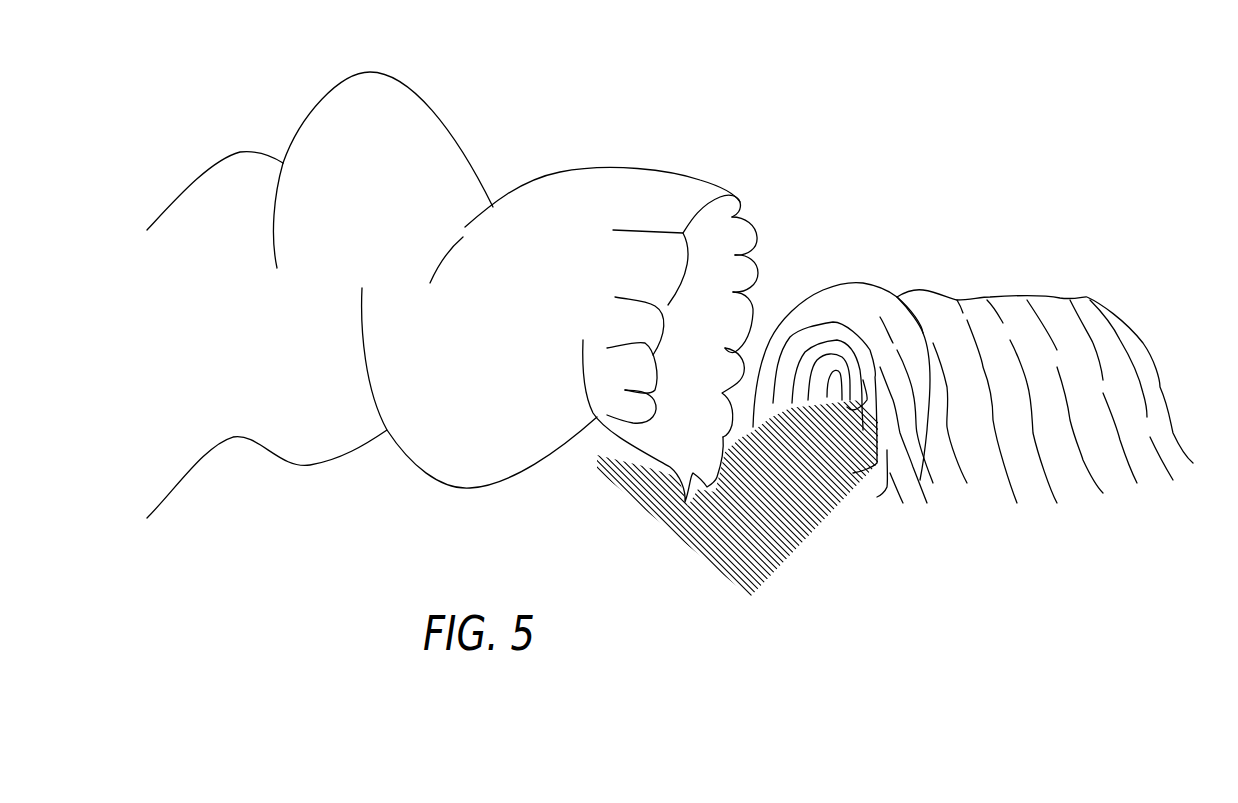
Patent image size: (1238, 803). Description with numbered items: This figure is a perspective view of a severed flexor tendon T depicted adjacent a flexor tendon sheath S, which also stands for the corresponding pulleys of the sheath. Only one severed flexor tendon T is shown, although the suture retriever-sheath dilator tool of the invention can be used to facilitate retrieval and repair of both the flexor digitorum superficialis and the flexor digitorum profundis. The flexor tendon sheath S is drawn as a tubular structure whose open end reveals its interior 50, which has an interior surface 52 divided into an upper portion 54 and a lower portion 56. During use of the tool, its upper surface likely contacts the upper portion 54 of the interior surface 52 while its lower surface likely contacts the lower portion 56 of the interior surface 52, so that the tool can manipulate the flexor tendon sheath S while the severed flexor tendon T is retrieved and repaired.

The severed flexor tendon T is at (688, 158).
The flexor tendon sheath S is at (1031, 275).
The interior 50 is at (833, 430).
The interior surface 52 is at (783, 403).
The upper portion 54 is at (817, 333).
The lower portion 56 is at (802, 440).